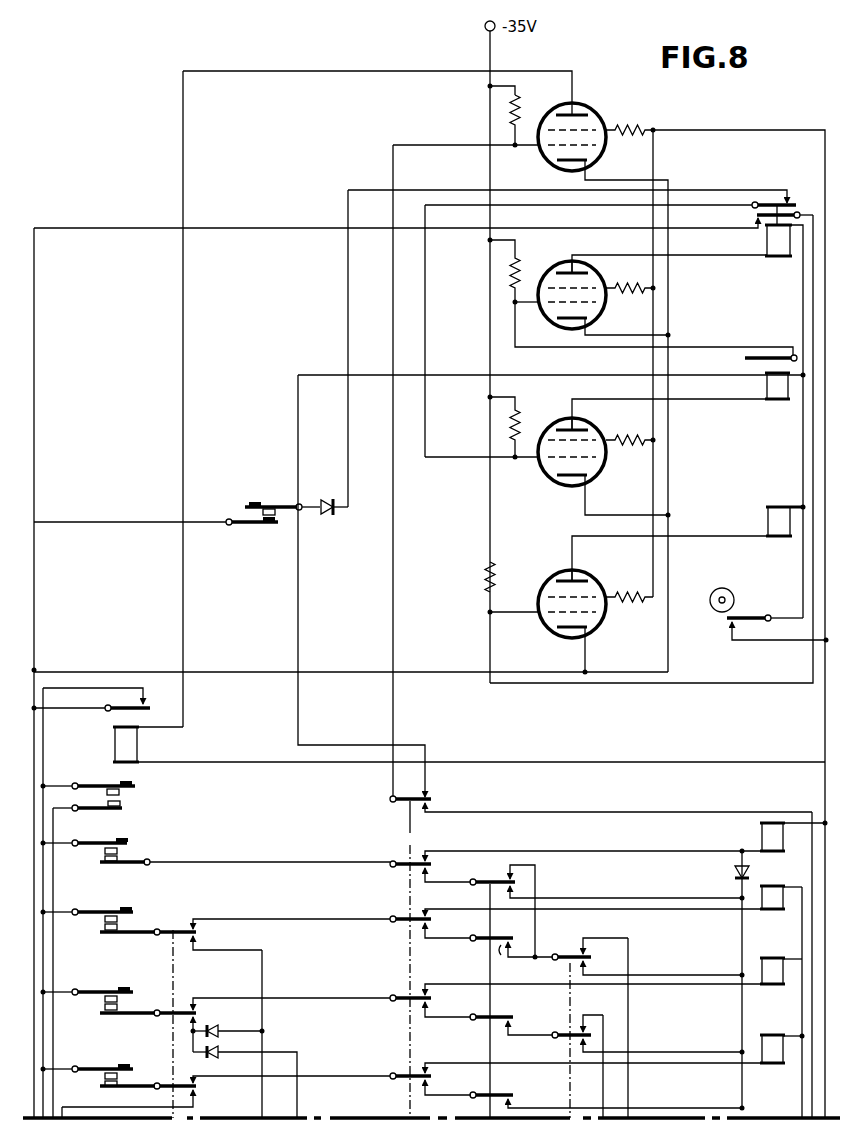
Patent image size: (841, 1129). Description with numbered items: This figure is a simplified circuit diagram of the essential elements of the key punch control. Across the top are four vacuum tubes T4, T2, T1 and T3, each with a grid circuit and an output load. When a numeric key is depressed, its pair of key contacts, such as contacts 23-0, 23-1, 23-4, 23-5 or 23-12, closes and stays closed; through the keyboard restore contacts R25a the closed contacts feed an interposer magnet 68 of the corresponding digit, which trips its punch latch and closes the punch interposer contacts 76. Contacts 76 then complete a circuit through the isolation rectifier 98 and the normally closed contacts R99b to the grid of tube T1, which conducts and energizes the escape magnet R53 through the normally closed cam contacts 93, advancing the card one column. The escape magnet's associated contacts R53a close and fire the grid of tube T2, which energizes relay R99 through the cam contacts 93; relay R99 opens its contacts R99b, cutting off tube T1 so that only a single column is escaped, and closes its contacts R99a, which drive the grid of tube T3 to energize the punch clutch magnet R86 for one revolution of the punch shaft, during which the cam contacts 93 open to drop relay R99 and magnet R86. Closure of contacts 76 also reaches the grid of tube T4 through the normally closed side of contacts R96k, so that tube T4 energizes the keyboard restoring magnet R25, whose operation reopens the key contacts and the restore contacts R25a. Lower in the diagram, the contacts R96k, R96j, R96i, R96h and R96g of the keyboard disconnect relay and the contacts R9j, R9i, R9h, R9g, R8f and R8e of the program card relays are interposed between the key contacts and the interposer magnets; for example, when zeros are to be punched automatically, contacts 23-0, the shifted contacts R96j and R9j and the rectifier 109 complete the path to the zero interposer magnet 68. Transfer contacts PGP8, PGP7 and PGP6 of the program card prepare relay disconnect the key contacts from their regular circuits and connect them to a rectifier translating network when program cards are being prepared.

The tube T4 is at (585, 113).
The tube T2 is at (587, 283).
The tube T1 is at (588, 437).
The tube T3 is at (588, 586).
The 99b contacts of relay R99 R99b is at (796, 188).
The 99a contacts of relay R99 R99a is at (756, 219).
The relay R99 is at (767, 241).
The contacts 53a R53a is at (752, 362).
The escape magnet R53 is at (767, 386).
The punch clutch magnet R86 is at (768, 521).
The cam contacts 93 is at (728, 622).
The punch interposer contacts 76 is at (247, 515).
The isolation rectifier 98 is at (329, 517).
The keyboard restore contacts R25a is at (91, 699).
The keyboard restoring magnet R25 is at (137, 745).
The switch 23-12 is at (111, 797).
The key contacts 23-0 is at (106, 852).
The key contacts 23-4 is at (112, 922).
The key contacts 23-5 is at (106, 1001).
The key contacts 23-1 is at (106, 1078).
The PCP-8 contacts of relay PCP PGP8 is at (196, 942).
The PCP-7 contacts of relay PCP PGP7 is at (196, 1022).
The PCP-6 contacts of relay PCP PGP6 is at (196, 1100).
The 96k contacts of relay R96 R96k is at (432, 807).
The 96j contacts of relay R96 R96j is at (432, 873).
The 96i contacts of relay R96 R96i is at (432, 928).
The 96h contacts of relay R96 R96h is at (432, 1007).
The 96g contacts of relay R96 R96g is at (432, 1085).
The 9j contacts of relay R9 R9j is at (517, 889).
The 9i contacts of relay R9 R9i is at (511, 959).
The 9h contacts of relay R9 R9h is at (509, 1026).
The 9g contacts of relay R9 R9g is at (511, 1104).
The 8f contacts of relay R8 R8f is at (590, 963).
The 8e contacts of relay R8 R8e is at (592, 1041).
The interposer magnet 68 is at (784, 887).
The rectifier 109 is at (755, 868).